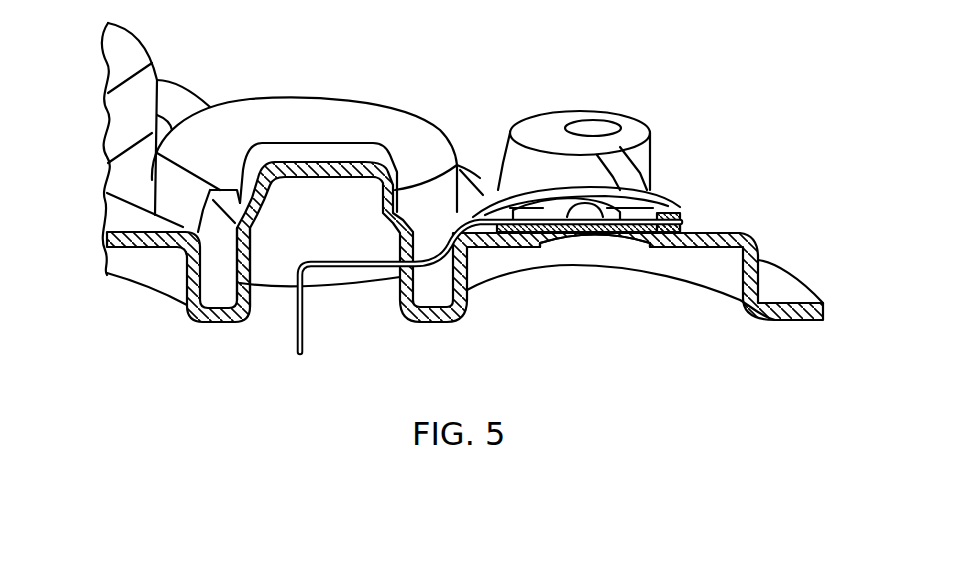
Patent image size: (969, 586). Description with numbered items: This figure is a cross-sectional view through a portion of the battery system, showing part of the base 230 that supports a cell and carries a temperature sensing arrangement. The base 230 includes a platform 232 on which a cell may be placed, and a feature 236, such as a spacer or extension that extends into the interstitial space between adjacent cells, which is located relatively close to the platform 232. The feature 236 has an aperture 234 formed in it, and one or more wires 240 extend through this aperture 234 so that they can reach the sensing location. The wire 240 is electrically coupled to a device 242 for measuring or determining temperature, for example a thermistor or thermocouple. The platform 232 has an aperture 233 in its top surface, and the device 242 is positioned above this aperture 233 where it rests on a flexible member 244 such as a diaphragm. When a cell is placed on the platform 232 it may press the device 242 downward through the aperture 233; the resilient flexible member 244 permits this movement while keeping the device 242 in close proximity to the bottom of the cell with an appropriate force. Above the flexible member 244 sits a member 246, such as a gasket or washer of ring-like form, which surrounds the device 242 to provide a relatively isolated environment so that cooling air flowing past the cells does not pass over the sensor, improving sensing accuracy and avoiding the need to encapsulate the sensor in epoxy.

The base 230 is at (777, 347).
The platform 232 is at (703, 213).
The aperture 233 is at (563, 246).
The aperture 234 is at (387, 282).
The feature 236 is at (260, 290).
The wire 240 is at (350, 259).
The device 242 is at (590, 212).
The flexible member 244 is at (620, 230).
The member 246 is at (660, 212).